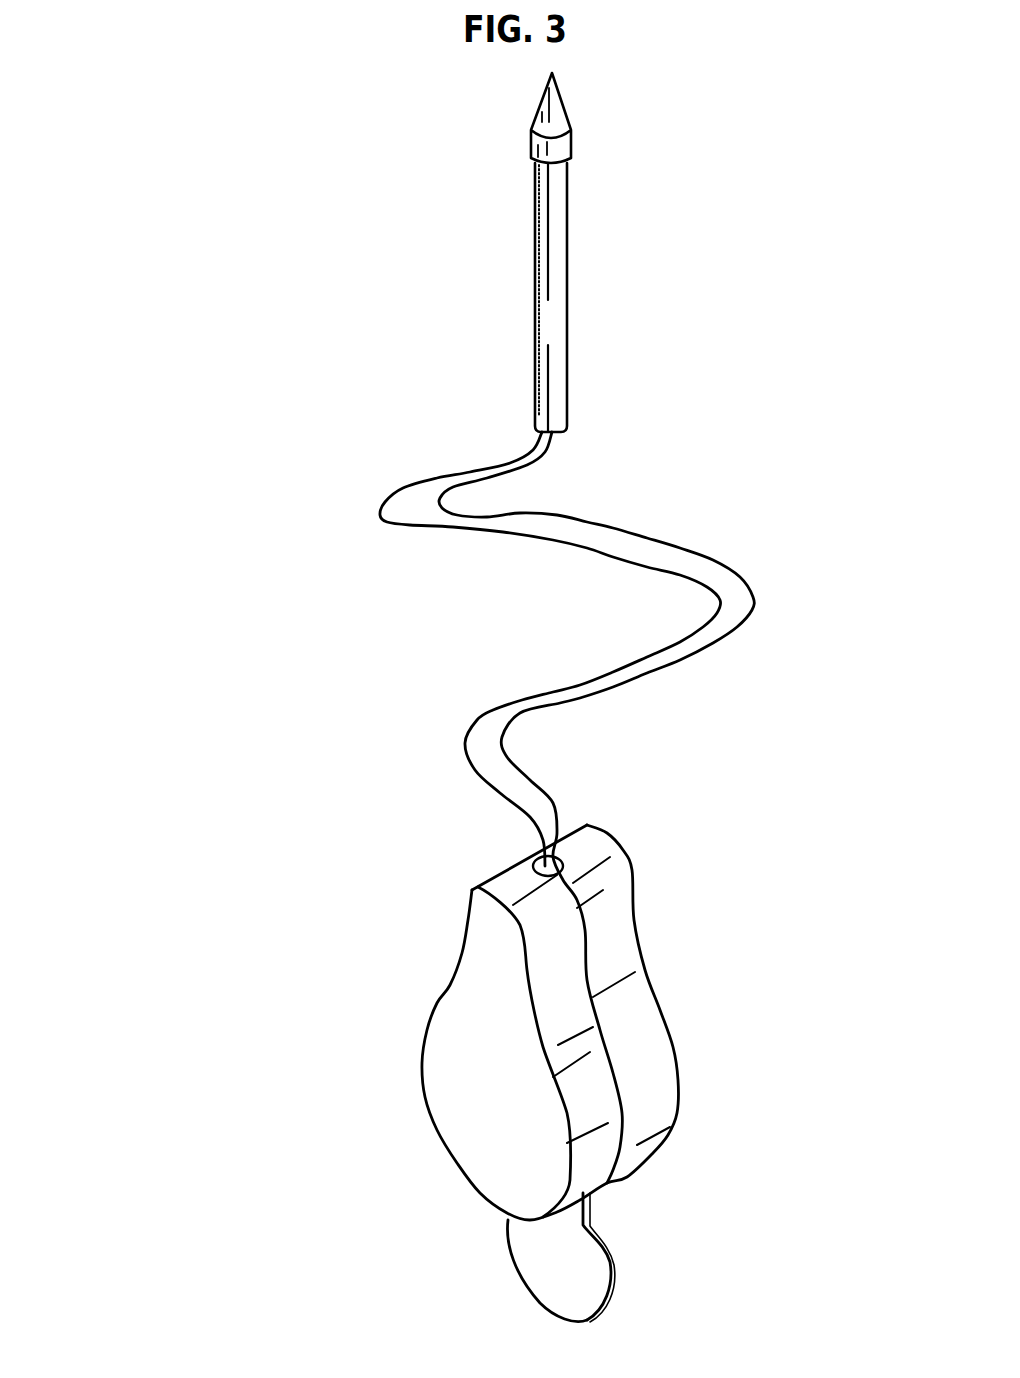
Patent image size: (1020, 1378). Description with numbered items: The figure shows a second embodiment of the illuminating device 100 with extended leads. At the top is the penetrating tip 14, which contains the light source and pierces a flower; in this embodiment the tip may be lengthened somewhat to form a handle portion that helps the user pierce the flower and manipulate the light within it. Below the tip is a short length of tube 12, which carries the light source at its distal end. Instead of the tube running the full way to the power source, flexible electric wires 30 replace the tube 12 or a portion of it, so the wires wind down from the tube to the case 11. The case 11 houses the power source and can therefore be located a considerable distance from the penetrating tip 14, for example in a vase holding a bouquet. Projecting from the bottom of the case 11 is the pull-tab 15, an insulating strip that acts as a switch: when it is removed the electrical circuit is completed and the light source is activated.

The device 100 is at (323, 715).
The penetrating tip 14 is at (552, 121).
The tube 12 is at (550, 322).
The electric wire 30 is at (522, 721).
The case 11 is at (500, 1078).
The pull-tab 15 is at (573, 1270).